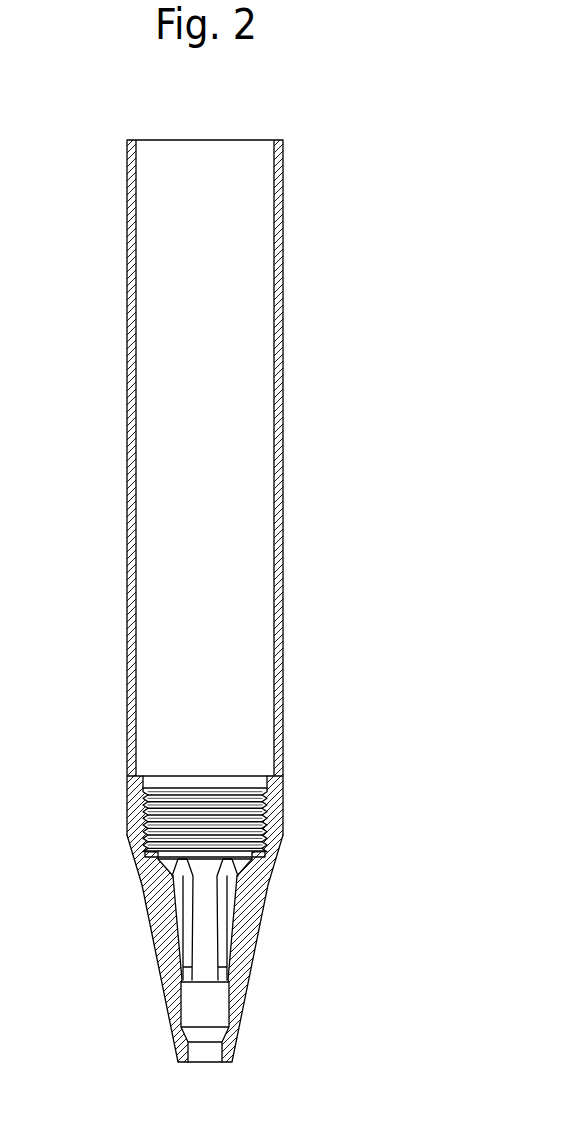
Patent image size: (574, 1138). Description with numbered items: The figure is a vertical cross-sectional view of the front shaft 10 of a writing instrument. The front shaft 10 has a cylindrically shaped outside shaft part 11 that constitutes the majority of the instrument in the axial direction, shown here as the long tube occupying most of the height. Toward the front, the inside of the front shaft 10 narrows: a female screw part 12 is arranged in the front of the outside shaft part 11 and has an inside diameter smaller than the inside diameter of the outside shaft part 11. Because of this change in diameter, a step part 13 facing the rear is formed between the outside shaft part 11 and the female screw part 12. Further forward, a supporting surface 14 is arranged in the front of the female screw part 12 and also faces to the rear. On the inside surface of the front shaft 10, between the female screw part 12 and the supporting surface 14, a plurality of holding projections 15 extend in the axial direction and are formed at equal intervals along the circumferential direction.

The front shaft 10 is at (358, 511).
The outside shaft part 11 is at (283, 386).
The female screw part 12 is at (178, 815).
The step part 13 is at (268, 777).
The supporting surface 14 is at (173, 965).
The holding projections 15 is at (190, 930).